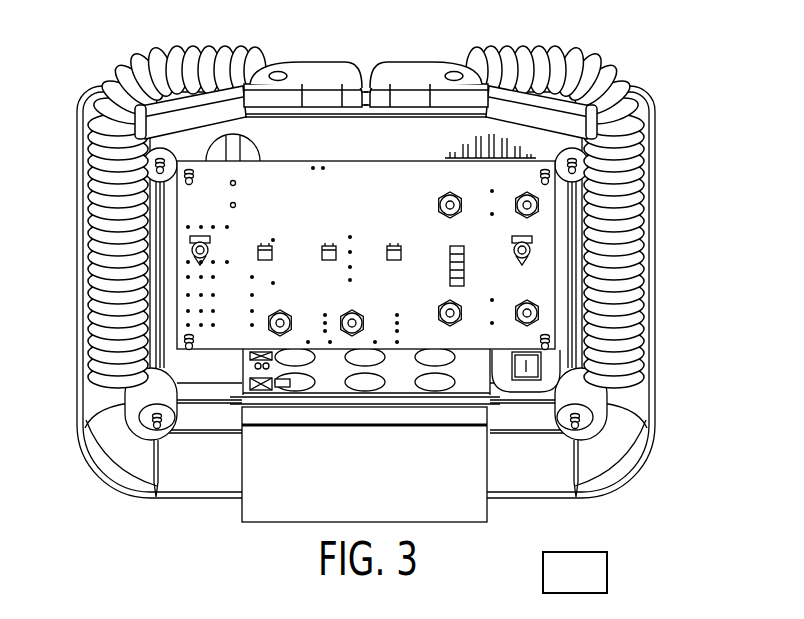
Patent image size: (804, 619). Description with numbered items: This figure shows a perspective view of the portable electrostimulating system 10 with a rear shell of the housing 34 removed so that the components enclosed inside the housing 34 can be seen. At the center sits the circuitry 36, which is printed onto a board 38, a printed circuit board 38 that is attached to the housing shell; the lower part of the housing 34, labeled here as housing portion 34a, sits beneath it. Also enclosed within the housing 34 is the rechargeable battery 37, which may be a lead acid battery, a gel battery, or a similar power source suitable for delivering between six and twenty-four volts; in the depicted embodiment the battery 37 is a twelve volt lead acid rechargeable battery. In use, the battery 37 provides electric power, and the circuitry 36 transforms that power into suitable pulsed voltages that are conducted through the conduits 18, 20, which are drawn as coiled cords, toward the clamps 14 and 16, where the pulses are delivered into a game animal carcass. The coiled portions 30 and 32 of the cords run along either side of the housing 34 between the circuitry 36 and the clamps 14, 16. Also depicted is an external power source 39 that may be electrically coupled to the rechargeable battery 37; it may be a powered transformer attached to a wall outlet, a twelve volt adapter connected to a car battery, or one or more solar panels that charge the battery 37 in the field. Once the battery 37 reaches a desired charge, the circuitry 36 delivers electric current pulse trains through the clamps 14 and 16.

The portable electrostimulating system 10 is at (630, 37).
The clamp 14 is at (193, 107).
The clamp 16 is at (572, 123).
The conduit 18 is at (200, 54).
The conduit 20 is at (527, 72).
The first coil 30 is at (108, 251).
The second coil 32 is at (630, 287).
The housing 34 is at (78, 357).
The housing bottom wall 34a is at (93, 471).
The circuitry 36 is at (340, 137).
The rechargeable battery 37 is at (353, 484).
The printed circuit board 38 is at (265, 198).
The external power source 39 is at (528, 515).